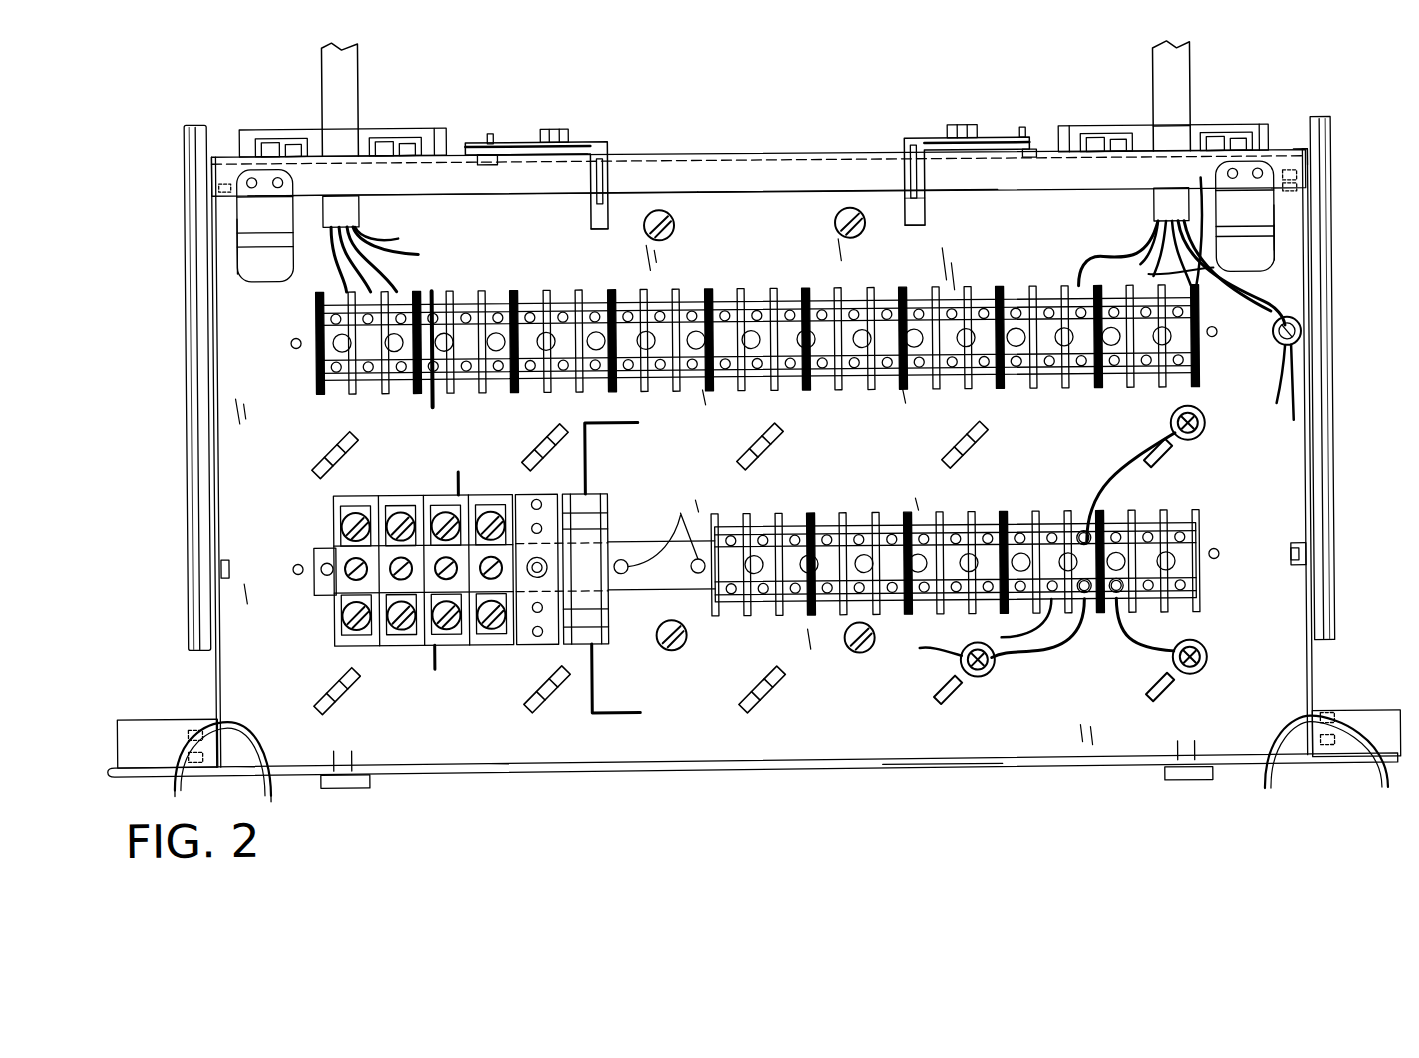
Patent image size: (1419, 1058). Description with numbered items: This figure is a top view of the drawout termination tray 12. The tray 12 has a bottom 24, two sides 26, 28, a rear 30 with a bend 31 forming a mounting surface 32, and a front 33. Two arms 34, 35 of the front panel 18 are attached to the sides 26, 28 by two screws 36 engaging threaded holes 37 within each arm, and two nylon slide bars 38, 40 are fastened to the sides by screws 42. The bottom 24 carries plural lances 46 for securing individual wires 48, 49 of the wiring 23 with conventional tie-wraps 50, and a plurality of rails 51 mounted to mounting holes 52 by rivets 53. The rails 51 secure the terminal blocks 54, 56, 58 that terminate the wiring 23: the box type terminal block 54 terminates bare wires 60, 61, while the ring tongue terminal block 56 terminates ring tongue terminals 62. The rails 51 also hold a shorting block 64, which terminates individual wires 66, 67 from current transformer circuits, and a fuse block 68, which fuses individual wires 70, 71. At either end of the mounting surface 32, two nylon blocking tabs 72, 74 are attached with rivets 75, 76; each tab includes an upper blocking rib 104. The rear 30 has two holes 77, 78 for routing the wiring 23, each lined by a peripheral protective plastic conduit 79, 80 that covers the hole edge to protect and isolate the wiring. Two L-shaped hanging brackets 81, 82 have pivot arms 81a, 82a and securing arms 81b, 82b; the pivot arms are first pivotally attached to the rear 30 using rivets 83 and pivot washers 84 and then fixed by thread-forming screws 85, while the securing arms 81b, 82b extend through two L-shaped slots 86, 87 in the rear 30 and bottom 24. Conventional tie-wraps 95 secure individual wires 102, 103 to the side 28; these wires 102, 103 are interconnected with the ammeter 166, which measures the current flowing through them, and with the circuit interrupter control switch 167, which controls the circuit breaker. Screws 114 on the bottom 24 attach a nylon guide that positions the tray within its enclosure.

The termination tray 12 is at (1232, 847).
The front panel 18 is at (800, 772).
The wiring 23 is at (350, 90).
The bottom 24 is at (1320, 440).
The side 26 is at (214, 700).
The side 28 is at (1312, 680).
The rear 30 is at (805, 158).
The bend 31 is at (1285, 150).
The mounting surface 32 is at (750, 192).
The front 33 is at (895, 762).
The arm 34 is at (228, 722).
The arm 35 is at (1305, 715).
The screw 36 is at (172, 788).
The threaded hole 37 is at (268, 785).
The nylon slide bar 38 is at (188, 350).
The nylon slide bar 40 is at (1312, 158).
The screw 42 is at (222, 186).
The lance 46 is at (772, 452).
The individual wire 48 is at (363, 268).
The individual wire 49 is at (1120, 460).
The tie-wrap 50 is at (1208, 428).
The rail 51 is at (320, 325).
The mounting hole 52 is at (297, 345).
The rivet 53 is at (318, 545).
The box type terminal block 54 is at (1232, 285).
The ring tongue terminal block 56 is at (794, 367).
The terminal block 58 is at (532, 493).
The bare wire 60 is at (742, 249).
The bare wire 61 is at (435, 400).
The ring tongue terminal 62 is at (1118, 612).
The shorting block 64 is at (330, 640).
The individual wire 66 is at (380, 260).
The individual wire 67 is at (438, 665).
The fuse block 68 is at (605, 493).
The individual wire 70 is at (400, 250).
The individual wire 71 is at (638, 714).
The nylon blocking tab 72 is at (300, 265).
The nylon blocking tab 74 is at (1280, 252).
The rivet 75 is at (250, 175).
The rivet 76 is at (280, 174).
The hole 77 is at (1170, 120).
The hole 78 is at (345, 126).
The protective plastic conduit 79 is at (1066, 130).
The protective plastic conduit 80 is at (472, 155).
The L-shaped hanging bracket 81 is at (779, 177).
The pivot arm 81a is at (552, 160).
The securing arm 81b is at (606, 195).
The L-shaped hanging bracket 82 is at (950, 174).
The pivot arm 82a is at (930, 180).
The securing arm 82b is at (906, 165).
The rivet 83 is at (493, 140).
The pivot washer 84 is at (498, 160).
The thread-forming screw 85 is at (560, 128).
The L-shaped slot 86 is at (602, 230).
The L-shaped slot 87 is at (917, 230).
The tie-wrap 95 is at (1302, 328).
The individual wire 102 is at (1278, 395).
The individual wire 103 is at (385, 235).
The upper blocking rib 104 is at (240, 255).
The screw 114 is at (668, 240).
The ammeter 166 is at (1180, 786).
The circuit interrupter control switch 167 is at (360, 787).